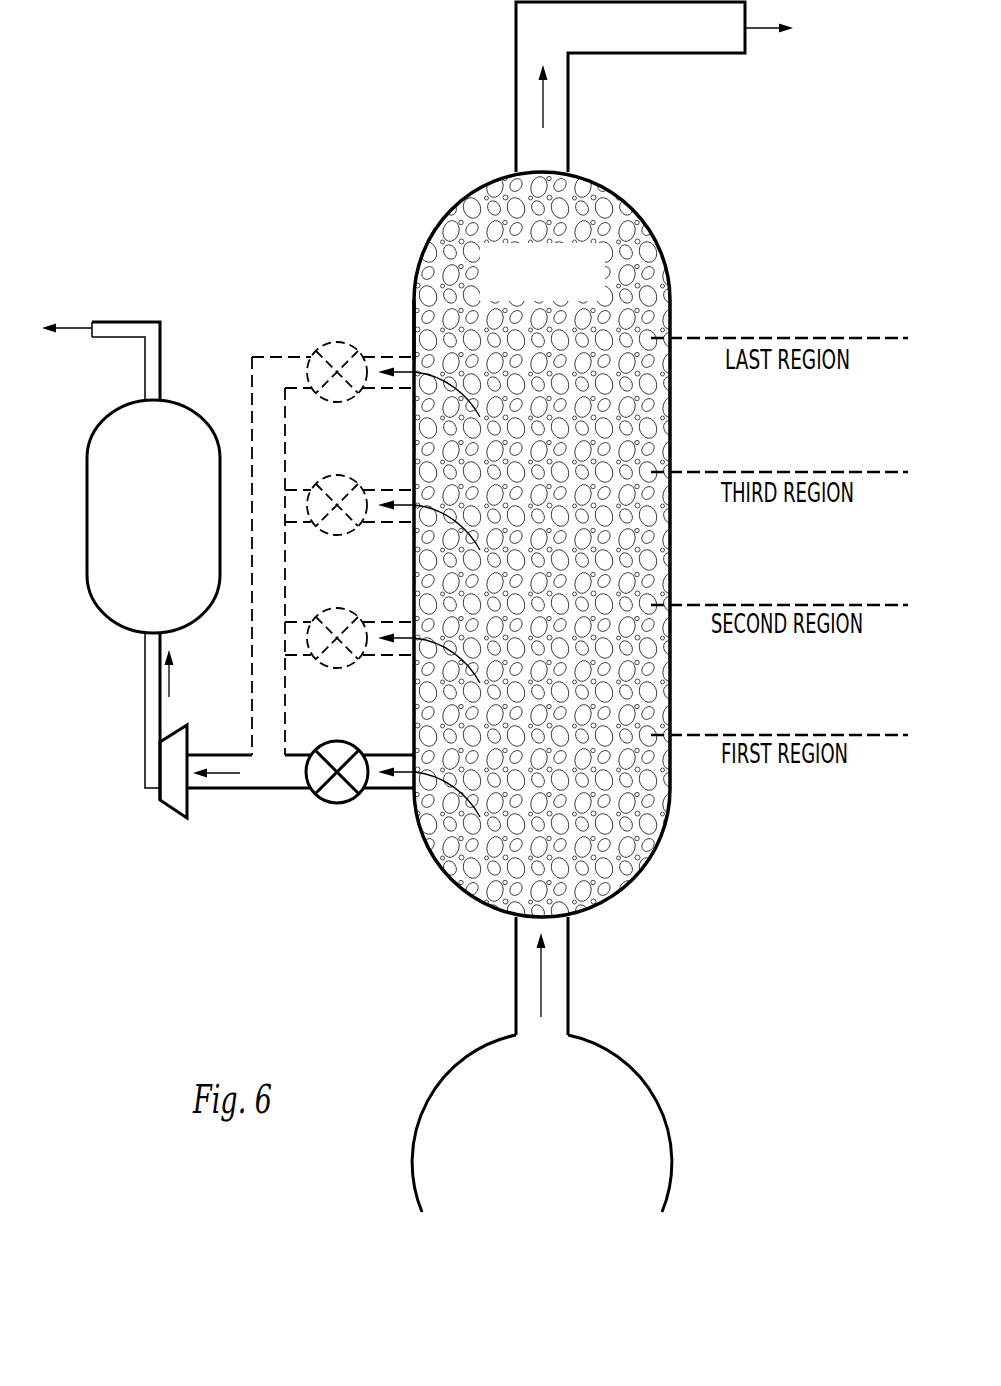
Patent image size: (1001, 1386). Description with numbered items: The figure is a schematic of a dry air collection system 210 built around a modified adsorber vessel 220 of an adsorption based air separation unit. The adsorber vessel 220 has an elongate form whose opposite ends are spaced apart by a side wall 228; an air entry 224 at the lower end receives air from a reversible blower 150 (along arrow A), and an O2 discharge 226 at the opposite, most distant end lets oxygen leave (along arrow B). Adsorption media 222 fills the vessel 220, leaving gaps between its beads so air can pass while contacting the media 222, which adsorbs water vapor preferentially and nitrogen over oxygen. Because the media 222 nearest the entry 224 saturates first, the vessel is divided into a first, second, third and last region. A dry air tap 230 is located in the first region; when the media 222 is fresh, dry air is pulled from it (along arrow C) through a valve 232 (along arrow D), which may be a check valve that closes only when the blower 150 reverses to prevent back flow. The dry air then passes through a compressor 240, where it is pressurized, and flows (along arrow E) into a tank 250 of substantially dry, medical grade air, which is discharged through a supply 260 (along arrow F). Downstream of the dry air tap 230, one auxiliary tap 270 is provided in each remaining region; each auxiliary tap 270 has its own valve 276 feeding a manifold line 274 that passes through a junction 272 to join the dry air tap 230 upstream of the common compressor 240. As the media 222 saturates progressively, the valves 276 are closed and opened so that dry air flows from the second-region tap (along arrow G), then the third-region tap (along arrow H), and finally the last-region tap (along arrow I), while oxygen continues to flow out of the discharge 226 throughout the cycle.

The dry air collection system 210 is at (240, 183).
The adsorber vessel 220 is at (447, 210).
The adsorption media 222 is at (603, 833).
The air entry 224 is at (527, 918).
The O2 discharge 226 is at (543, 172).
The side wall 228 is at (413, 299).
The dry air tap 230 is at (368, 792).
The valve 232 is at (323, 803).
The compressor 240 is at (165, 810).
The tank 250 is at (118, 627).
The supply 260 is at (130, 322).
The auxiliary tap 270 is at (395, 357).
The junction 272 is at (268, 773).
The manifold line 274 is at (268, 395).
The valve 276 is at (331, 345).
The reversible blower 150 is at (640, 1072).
The arrow A is at (541, 978).
The arrow B is at (543, 113).
The arrow C is at (415, 810).
The arrow D is at (228, 770).
The arrow E is at (170, 690).
The arrow F is at (73, 322).
The arrow G is at (424, 670).
The arrow H is at (426, 535).
The arrow I is at (420, 400).